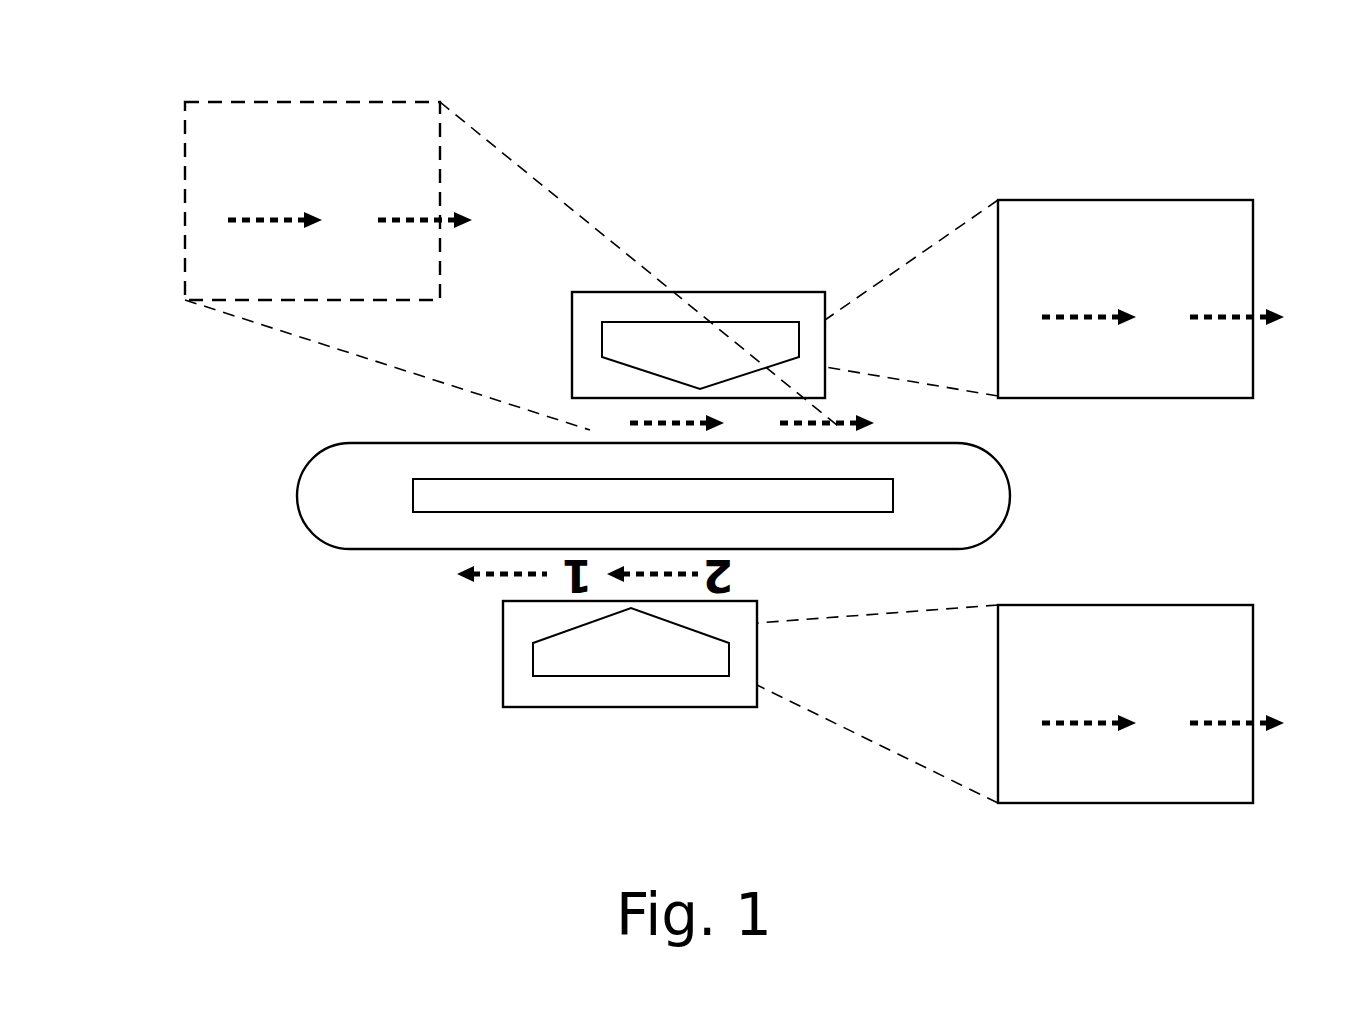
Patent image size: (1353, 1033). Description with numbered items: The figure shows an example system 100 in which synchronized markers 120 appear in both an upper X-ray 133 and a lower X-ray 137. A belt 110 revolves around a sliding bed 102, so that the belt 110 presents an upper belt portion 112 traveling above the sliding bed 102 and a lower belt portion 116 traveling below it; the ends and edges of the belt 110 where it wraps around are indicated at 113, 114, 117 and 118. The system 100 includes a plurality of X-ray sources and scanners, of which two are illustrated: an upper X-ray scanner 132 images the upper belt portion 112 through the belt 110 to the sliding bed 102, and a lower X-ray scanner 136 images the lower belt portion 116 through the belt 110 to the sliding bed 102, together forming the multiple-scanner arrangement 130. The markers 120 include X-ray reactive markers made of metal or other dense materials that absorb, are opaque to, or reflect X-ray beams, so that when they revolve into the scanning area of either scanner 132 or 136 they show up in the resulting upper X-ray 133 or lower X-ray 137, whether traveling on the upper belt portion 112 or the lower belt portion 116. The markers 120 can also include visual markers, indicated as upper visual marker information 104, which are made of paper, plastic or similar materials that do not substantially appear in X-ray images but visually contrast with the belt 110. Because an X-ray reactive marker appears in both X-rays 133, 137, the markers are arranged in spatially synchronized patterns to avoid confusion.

The system 100 is at (961, 55).
The upper visual marker information 104 is at (328, 201).
The sliding bed 102 is at (653, 495).
The belt 110 is at (653, 496).
The upper belt portion 112 is at (368, 401).
The belt outer edge 113 is at (918, 443).
The belt inner edge 114 is at (895, 443).
The lower belt portion 116 is at (368, 573).
The belt lower outer edge 117 is at (915, 549).
The belt lower inner edge 118 is at (885, 549).
The markers 120 is at (584, 407).
The X-ray scanning system 130 is at (834, 205).
The upper X-ray scanner 132 is at (698, 345).
The upper X-ray 133 is at (1141, 299).
The lower X-ray scanner 136 is at (630, 654).
The lower X-ray 137 is at (1141, 704).